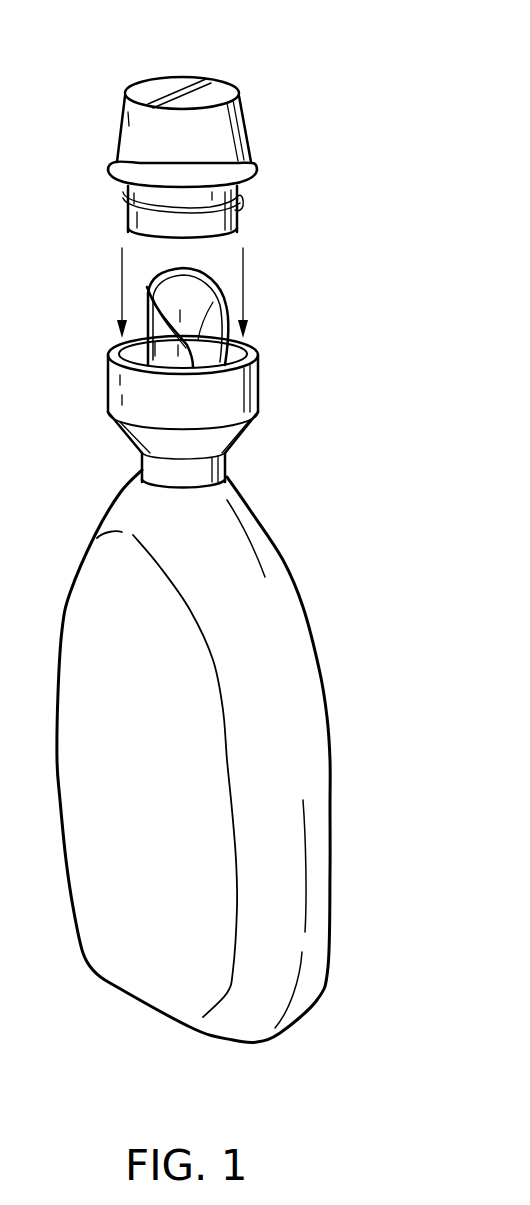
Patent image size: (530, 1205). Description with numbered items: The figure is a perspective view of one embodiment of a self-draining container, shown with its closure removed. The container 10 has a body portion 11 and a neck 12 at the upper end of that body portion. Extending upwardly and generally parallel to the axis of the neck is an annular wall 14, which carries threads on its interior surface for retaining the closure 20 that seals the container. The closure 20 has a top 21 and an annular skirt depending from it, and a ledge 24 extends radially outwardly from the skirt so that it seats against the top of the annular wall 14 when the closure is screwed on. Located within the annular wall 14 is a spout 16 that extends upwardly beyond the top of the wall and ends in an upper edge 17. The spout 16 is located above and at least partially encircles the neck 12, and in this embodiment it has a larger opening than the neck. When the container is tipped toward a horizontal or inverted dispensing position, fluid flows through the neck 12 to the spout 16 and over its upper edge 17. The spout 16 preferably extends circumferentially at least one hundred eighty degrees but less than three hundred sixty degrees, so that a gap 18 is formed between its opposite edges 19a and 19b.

The container 10 is at (231, 756).
The body portion 11 is at (295, 712).
The neck 12 is at (142, 455).
The annular wall 14 is at (195, 382).
The spout 16 is at (187, 301).
The upper edge 17 is at (157, 273).
The gap 18 is at (218, 292).
The edge 19a is at (112, 347).
The edge 19b is at (242, 343).
The closure 20 is at (215, 128).
The top 21 is at (155, 90).
The ledge 24 is at (250, 177).